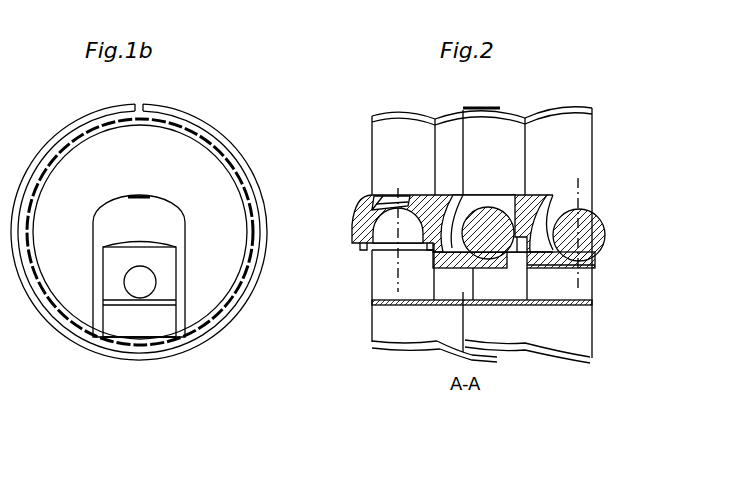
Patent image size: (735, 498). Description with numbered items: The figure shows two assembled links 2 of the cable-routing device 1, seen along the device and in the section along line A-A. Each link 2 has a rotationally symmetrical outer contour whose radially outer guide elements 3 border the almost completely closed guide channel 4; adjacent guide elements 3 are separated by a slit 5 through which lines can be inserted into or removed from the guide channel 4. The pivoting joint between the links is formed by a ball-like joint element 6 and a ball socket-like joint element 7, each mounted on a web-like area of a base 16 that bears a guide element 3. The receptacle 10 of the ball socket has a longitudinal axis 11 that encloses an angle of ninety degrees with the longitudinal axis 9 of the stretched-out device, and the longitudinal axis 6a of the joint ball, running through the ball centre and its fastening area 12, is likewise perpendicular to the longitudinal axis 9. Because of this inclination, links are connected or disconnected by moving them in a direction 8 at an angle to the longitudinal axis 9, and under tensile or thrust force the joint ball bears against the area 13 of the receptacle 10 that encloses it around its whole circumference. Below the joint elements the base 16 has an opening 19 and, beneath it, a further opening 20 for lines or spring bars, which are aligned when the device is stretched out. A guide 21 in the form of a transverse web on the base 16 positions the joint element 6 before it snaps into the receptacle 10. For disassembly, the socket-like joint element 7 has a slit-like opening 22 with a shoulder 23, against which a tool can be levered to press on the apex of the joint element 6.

In FIG. 2, the cable-routing device 1 is at (509, 108).
In FIG. 2, the link 2 is at (405, 132).
In FIG. 1B, the guide element 3 is at (208, 130).
In FIG. 1B, the guide channel 4 is at (223, 270).
In FIG. 1B, the slit 5 is at (136, 121).
In FIG. 2, the ball-like joint element 6 is at (594, 237).
In FIG. 2, the longitudinal axis of the ball-like joint element 6a is at (567, 222).
In FIG. 2, the ball socket-like joint element 7 is at (368, 213).
In FIG. 2, the connecting/disconnecting direction 8 is at (490, 182).
In FIG. 2, the longitudinal axis of the cable-routing device 9 is at (638, 230).
In FIG. 2, the receptacle 10 is at (385, 233).
In FIG. 2, the longitudinal axis of the receptacle 11 is at (403, 244).
In FIG. 2, the fastening area 12 is at (597, 266).
In FIG. 2, the contact area of the receptacle 13 is at (360, 238).
In FIG. 1B, the base 16 is at (165, 278).
In FIG. 1B, the opening 19 is at (135, 290).
In FIG. 2, the opening 19 is at (546, 287).
In FIG. 1B, the opening 20 is at (147, 327).
In FIG. 2, the opening 20 is at (515, 323).
In FIG. 1B, the guide 21 is at (160, 300).
In FIG. 2, the guide 21 is at (473, 270).
In FIG. 1B, the slit-like opening 22 is at (137, 195).
In FIG. 2, the slit-like opening 22 is at (372, 195).
In FIG. 2, the shoulder 23 is at (390, 196).